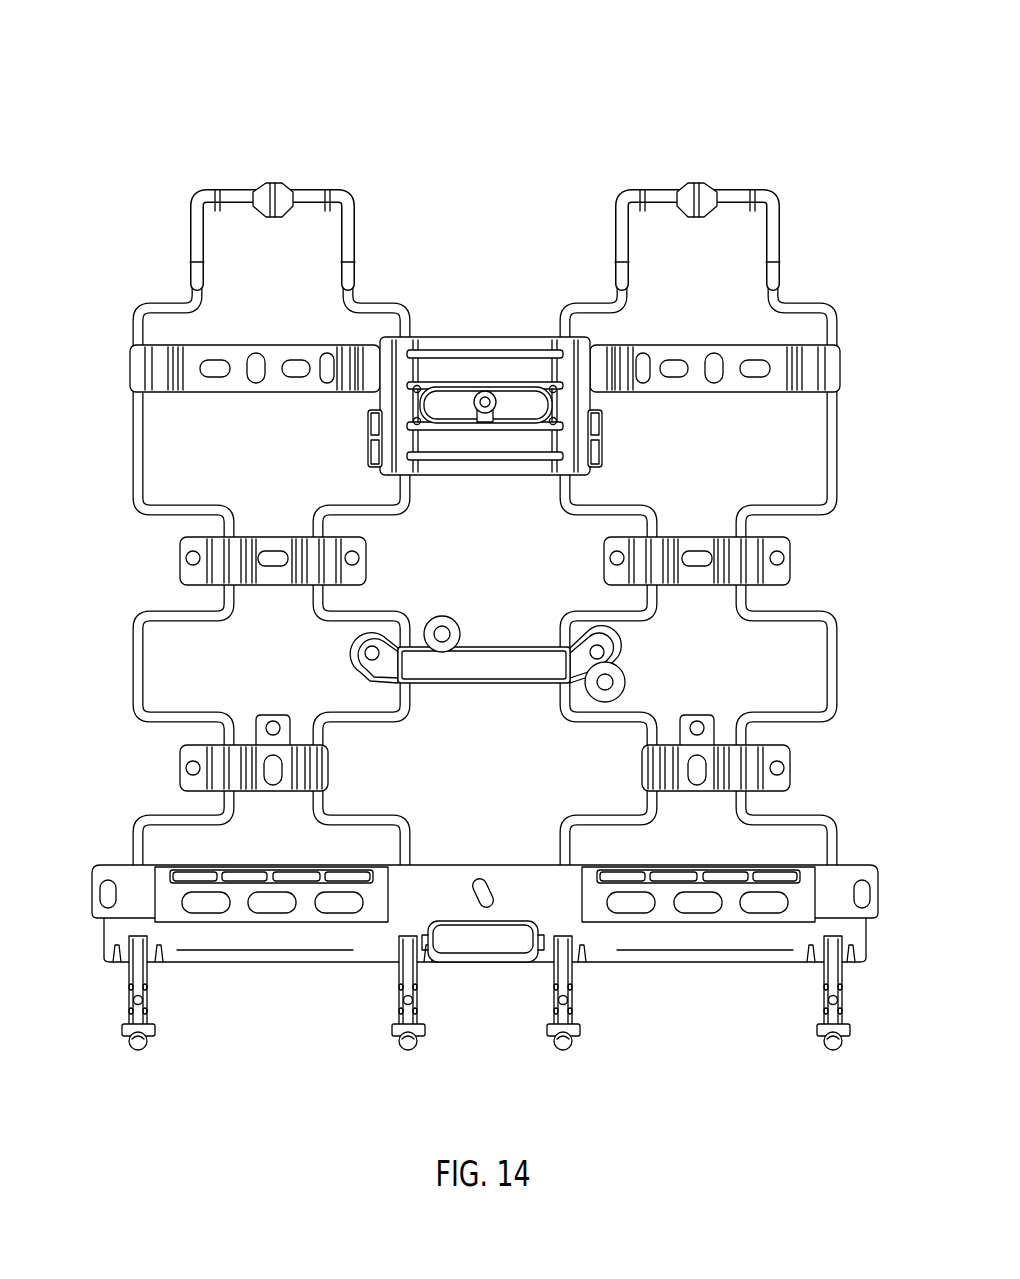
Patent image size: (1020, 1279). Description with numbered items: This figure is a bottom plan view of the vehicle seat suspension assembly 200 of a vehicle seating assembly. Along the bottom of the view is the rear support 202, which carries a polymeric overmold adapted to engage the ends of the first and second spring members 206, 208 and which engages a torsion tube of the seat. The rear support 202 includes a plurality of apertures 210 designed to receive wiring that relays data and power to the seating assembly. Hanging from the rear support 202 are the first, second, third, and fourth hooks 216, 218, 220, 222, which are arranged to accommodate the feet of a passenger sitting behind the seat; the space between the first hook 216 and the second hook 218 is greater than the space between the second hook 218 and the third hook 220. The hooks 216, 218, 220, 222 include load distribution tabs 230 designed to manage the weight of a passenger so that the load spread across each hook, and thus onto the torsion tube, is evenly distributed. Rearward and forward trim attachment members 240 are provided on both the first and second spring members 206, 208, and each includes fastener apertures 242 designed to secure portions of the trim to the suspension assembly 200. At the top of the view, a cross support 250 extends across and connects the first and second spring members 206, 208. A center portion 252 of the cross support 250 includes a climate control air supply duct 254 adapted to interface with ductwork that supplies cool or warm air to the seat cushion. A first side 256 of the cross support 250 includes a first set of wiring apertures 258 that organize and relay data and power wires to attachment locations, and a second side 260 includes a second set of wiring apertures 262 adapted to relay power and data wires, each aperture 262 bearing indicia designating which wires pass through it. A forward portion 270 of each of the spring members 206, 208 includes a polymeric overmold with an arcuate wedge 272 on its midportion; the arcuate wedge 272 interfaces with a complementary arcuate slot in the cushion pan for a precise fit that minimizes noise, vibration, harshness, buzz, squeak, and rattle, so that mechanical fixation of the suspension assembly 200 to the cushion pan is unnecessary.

The vehicle seat suspension assembly 200 is at (803, 65).
The rear support 202 is at (485, 936).
The first spring member 206 is at (134, 658).
The second spring member 208 is at (836, 658).
The apertures 210 is at (340, 905).
The first hook 216 is at (137, 1052).
The second hook 218 is at (405, 1052).
The third hook 220 is at (564, 1052).
The fourth hook 222 is at (834, 1052).
The load distribution tabs 230 is at (484, 1013).
The trim attachment members 240 is at (276, 588).
The fastener apertures 242 is at (195, 558).
The cross support 250 is at (485, 403).
The center portion 252 is at (502, 345).
The climate control air supply duct 254 is at (457, 395).
The first side 256 is at (255, 367).
The first set of wiring apertures 258 is at (330, 368).
The second side 260 is at (715, 367).
The second set of wiring apertures 262 is at (760, 368).
The forward portion 270 is at (616, 207).
The arcuate wedge 272 is at (691, 190).